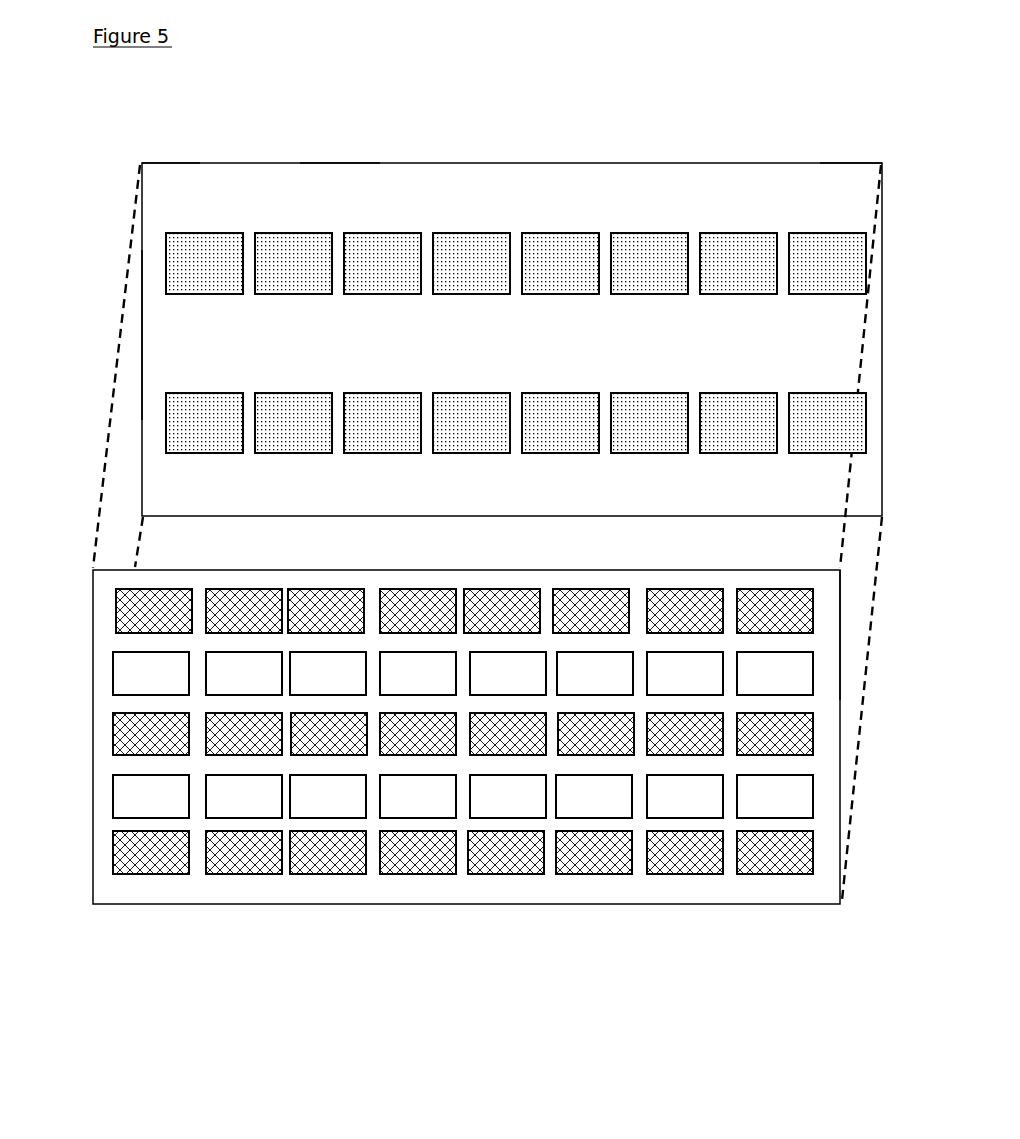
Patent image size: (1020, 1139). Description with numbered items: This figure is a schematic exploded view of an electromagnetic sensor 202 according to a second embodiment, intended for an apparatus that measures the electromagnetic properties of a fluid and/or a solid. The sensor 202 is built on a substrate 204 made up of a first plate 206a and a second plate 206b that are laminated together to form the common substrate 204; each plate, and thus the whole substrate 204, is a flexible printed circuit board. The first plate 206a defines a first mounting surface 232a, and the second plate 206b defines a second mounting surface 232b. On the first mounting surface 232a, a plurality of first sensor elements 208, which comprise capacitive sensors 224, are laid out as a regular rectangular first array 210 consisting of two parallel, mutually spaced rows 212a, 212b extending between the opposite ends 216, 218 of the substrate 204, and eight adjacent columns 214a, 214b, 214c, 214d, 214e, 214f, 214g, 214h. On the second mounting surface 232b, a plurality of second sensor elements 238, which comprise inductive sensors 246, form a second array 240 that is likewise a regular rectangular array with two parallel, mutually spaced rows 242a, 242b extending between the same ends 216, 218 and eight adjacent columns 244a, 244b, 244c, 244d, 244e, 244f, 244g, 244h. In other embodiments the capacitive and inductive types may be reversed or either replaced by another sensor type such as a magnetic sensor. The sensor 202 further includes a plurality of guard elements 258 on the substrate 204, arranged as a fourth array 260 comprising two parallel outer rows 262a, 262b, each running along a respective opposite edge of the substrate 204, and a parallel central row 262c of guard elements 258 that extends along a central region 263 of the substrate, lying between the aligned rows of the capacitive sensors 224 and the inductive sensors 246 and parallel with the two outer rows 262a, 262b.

The electromagnetic sensor 202 is at (109, 278).
The substrate 204 is at (263, 212).
The first plate 206a is at (343, 193).
The second plate 206b is at (529, 578).
The first sensor elements 208 is at (492, 240).
The first array 210 is at (640, 250).
The first row of first sensor elements 212a is at (552, 209).
The second row of first sensor elements 212b is at (552, 459).
The column of first sensor elements 214a is at (204, 469).
The column of first sensor elements 214b is at (293, 469).
The column of first sensor elements 214c is at (382, 469).
The column of first sensor elements 214d is at (471, 469).
The column of first sensor elements 214e is at (560, 469).
The column of first sensor elements 214f is at (649, 469).
The column of first sensor elements 214g is at (738, 469).
The column of first sensor elements 214h is at (827, 469).
The first end of substrate 216 is at (153, 203).
The second end of substrate 218 is at (864, 193).
The capacitive sensors 224 is at (556, 262).
The first mounting surface 232a is at (165, 331).
The second mounting surface 232b is at (817, 580).
The second sensor elements 238 is at (233, 677).
The second array 240 is at (312, 799).
The first row of second sensor elements 242a is at (419, 673).
The second row of second sensor elements 242b is at (419, 795).
The column of second sensor elements 244a is at (152, 791).
The column of second sensor elements 244b is at (244, 791).
The column of second sensor elements 244c is at (327, 791).
The column of second sensor elements 244d is at (418, 791).
The column of second sensor elements 244e is at (505, 791).
The column of second sensor elements 244f is at (593, 791).
The column of second sensor elements 244g is at (685, 791).
The column of second sensor elements 244h is at (775, 791).
The inductive sensors 246 is at (504, 670).
The guard elements 258 is at (805, 850).
The fourth array 260 is at (773, 865).
The outer row of guard elements 262a is at (419, 602).
The outer row of guard elements 262b is at (419, 848).
The central row of guard elements 262c is at (419, 734).
The central region of substrate 263 is at (372, 728).